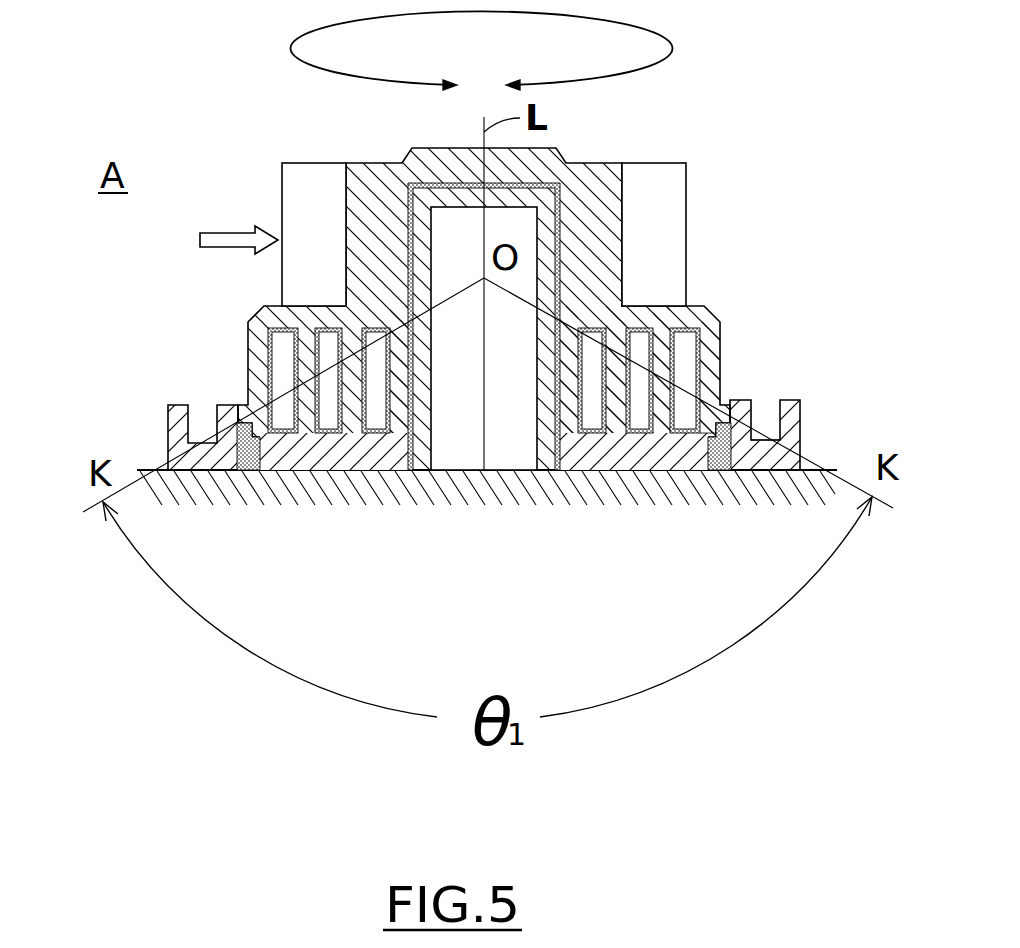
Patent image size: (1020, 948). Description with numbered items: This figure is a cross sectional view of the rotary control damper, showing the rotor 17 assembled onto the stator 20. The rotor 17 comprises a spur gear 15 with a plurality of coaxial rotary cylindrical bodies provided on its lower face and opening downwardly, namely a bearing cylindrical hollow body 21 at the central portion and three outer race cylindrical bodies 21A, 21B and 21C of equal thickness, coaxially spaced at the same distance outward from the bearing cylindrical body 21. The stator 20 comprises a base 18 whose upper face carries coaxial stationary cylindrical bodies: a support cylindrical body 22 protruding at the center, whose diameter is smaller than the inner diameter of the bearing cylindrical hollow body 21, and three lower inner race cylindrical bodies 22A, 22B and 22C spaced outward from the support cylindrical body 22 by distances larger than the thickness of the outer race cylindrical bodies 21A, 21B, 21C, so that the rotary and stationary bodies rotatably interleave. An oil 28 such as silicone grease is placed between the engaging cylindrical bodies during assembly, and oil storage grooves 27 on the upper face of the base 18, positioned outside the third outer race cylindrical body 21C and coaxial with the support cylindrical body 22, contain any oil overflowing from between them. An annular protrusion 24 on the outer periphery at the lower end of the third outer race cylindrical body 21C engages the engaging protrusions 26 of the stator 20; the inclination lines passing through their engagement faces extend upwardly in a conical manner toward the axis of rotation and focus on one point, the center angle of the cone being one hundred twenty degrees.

The spur gear 15 is at (597, 173).
The rotor 17 is at (350, 162).
The base 18 is at (820, 398).
The stator 20 is at (173, 400).
The bearing cylindrical hollow body 21 is at (570, 350).
The outer race cylindrical body 21A is at (617, 343).
The outer race cylindrical body 21B is at (663, 343).
The outer race cylindrical body 21C is at (708, 350).
The support cylindrical body 22 is at (551, 372).
The inner race cylindrical body 22A is at (590, 367).
The inner race cylindrical body 22B is at (645, 377).
The inner race cylindrical body 22C is at (688, 375).
The annular protrusion 24 is at (700, 395).
The engaging protrusion 26 is at (248, 420).
The oil storage groove 27 is at (820, 425).
The oil 28 is at (697, 383).